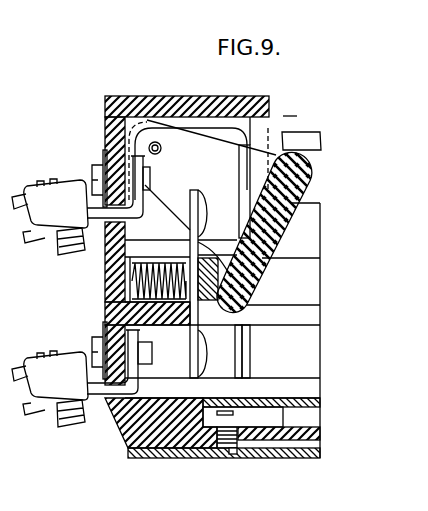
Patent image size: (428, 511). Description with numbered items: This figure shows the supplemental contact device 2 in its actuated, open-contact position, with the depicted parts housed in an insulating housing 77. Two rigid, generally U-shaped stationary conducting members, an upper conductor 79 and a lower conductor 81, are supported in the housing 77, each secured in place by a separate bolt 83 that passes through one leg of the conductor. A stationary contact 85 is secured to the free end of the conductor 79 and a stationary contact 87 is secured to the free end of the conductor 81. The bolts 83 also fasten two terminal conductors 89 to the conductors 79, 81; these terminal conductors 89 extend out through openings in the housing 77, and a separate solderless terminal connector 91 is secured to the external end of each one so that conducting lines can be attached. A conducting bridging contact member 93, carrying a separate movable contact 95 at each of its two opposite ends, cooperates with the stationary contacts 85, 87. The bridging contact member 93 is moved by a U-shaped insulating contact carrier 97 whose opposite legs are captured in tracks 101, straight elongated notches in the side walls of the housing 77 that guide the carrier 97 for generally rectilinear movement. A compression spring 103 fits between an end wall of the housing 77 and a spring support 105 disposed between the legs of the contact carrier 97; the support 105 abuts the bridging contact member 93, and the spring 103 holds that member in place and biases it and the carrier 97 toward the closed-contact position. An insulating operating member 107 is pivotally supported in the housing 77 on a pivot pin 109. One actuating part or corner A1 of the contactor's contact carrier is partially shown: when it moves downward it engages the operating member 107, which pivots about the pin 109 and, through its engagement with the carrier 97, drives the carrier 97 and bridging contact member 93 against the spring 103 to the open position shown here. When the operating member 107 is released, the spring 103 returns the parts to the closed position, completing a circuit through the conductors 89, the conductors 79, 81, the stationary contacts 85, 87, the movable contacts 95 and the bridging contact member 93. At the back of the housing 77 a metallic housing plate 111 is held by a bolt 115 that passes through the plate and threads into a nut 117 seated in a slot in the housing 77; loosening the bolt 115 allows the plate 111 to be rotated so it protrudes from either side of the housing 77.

The insulating housing 77 is at (140, 108).
The upper stationary conducting member 79 is at (192, 120).
The lower stationary conducting member 81 is at (183, 364).
The bolt 83 is at (93, 167).
The stationary contact 85 is at (240, 190).
The stationary contact 87 is at (242, 359).
The terminal conductor 89 is at (90, 222).
The solderless terminal connector 91 is at (36, 183).
The bridging contact member 93 is at (190, 196).
The movable contact 95 is at (207, 212).
The contact carrier 97 is at (212, 272).
The track 101 is at (290, 290).
The compression spring 103 is at (143, 265).
The spring support 105 is at (177, 258).
The operating member 107 is at (295, 213).
The pivot pin 109 is at (162, 150).
The housing plate 111 is at (178, 450).
The bolt 115 is at (231, 450).
The nut 117 is at (283, 424).
The supplemental contact device 2 is at (290, 107).
The actuating part A1 is at (298, 134).